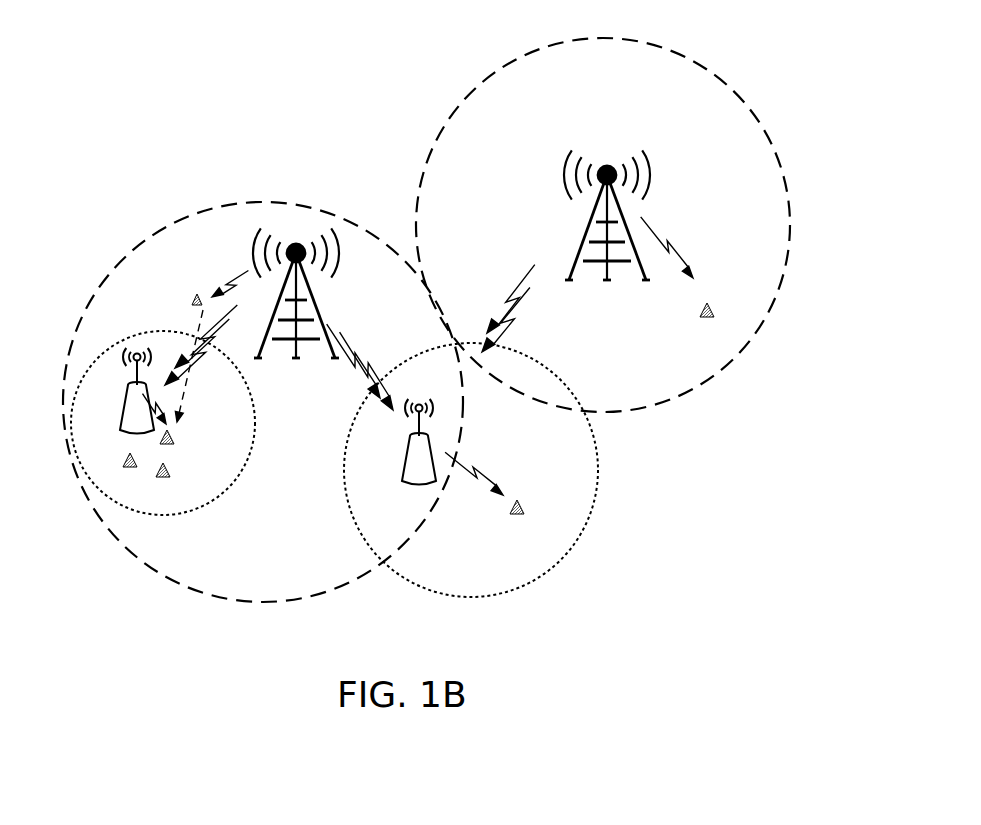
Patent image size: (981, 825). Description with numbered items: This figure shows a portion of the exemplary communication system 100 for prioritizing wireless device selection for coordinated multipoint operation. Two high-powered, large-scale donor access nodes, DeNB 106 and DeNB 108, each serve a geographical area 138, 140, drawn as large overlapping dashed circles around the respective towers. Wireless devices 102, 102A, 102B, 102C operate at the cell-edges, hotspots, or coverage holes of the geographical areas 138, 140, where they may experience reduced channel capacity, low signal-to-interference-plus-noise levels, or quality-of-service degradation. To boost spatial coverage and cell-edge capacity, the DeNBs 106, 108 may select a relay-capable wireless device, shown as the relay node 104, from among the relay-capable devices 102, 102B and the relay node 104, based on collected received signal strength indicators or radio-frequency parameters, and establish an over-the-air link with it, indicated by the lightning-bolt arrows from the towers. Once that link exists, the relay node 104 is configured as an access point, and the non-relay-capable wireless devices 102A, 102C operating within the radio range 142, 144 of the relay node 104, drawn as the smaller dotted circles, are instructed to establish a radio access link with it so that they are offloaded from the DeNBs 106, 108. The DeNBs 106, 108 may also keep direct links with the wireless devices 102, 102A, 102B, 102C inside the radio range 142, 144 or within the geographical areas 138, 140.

The communication system 100 is at (113, 620).
The wireless device 102 is at (199, 292).
The wireless device 102A is at (523, 512).
The wireless device 102B is at (706, 302).
The wireless device 102C is at (174, 441).
The relay node 104 is at (124, 414).
The donor access node 106 is at (268, 331).
The donor access node 108 is at (578, 256).
The geographical area 138 is at (258, 203).
The geographical area 140 is at (450, 117).
The radio range 142 is at (156, 515).
The radio range 144 is at (450, 596).